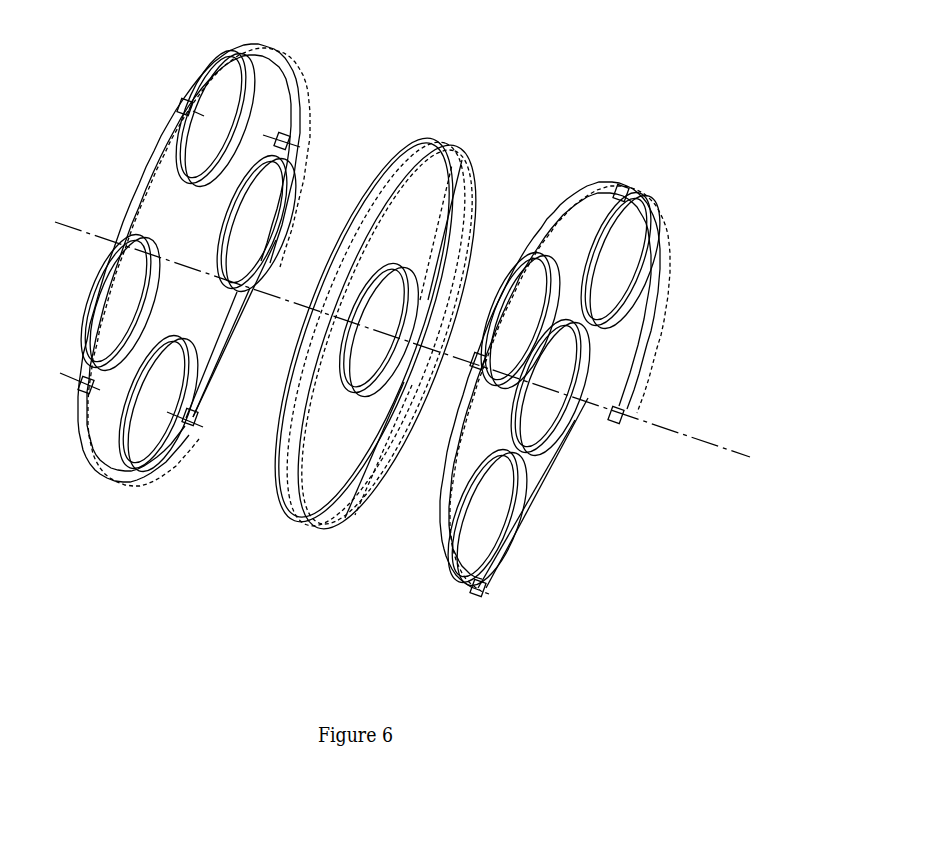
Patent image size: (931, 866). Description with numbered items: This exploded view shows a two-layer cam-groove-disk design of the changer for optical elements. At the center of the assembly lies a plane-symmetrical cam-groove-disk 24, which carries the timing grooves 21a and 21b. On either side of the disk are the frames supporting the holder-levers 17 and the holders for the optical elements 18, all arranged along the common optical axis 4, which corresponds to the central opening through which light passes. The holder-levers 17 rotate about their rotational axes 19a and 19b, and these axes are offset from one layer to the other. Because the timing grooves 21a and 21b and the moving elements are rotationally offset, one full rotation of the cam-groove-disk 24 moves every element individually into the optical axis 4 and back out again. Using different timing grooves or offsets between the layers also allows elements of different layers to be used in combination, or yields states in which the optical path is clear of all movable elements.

The optical axis 4 is at (394, 311).
The holder-lever 17 is at (263, 80).
The holder for optical element 18 is at (485, 527).
The holder-lever rotational axis 19a is at (157, 84).
The holder-lever rotational axis 19b is at (518, 570).
The timing groove 21a is at (382, 303).
The timing groove 21b is at (466, 334).
The cam-groove-disk 24 is at (388, 158).